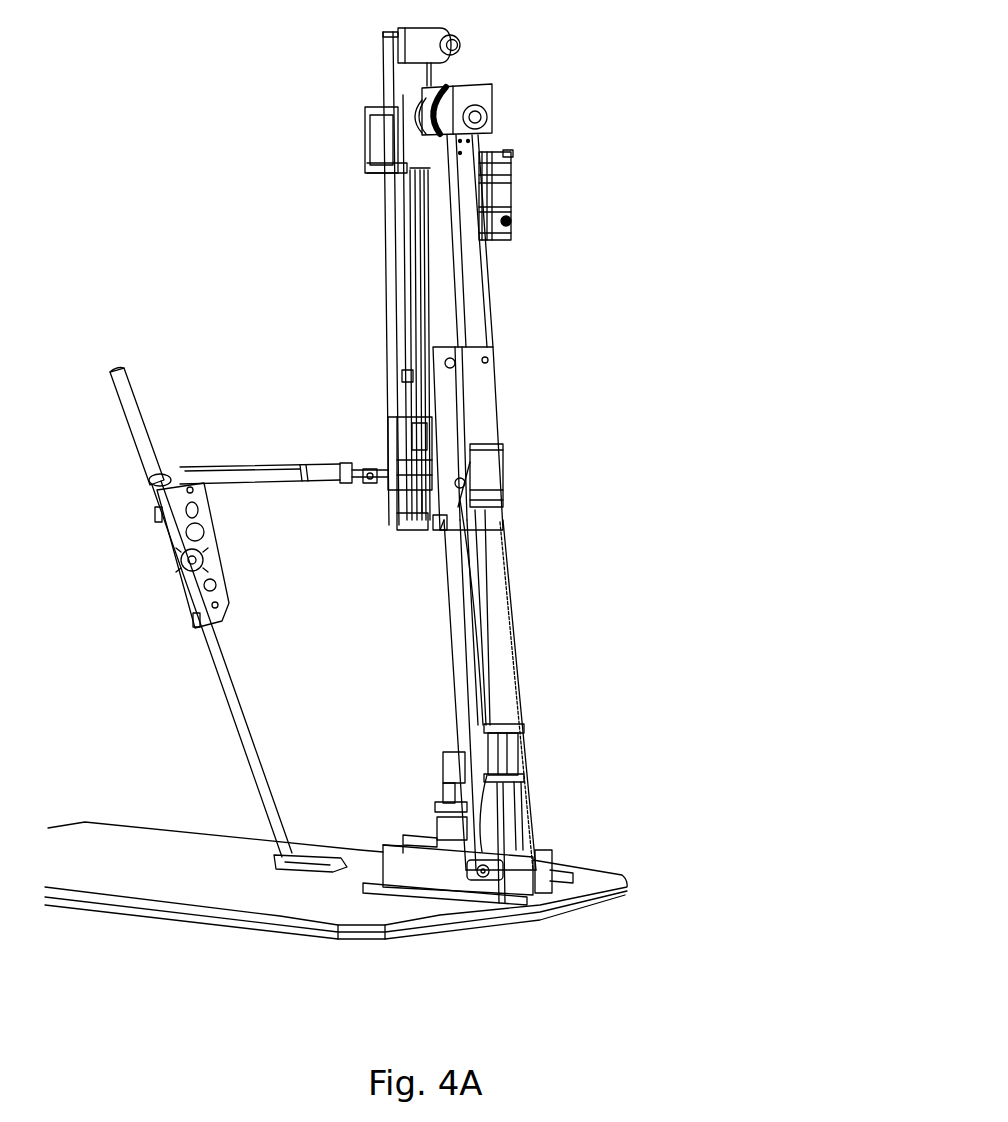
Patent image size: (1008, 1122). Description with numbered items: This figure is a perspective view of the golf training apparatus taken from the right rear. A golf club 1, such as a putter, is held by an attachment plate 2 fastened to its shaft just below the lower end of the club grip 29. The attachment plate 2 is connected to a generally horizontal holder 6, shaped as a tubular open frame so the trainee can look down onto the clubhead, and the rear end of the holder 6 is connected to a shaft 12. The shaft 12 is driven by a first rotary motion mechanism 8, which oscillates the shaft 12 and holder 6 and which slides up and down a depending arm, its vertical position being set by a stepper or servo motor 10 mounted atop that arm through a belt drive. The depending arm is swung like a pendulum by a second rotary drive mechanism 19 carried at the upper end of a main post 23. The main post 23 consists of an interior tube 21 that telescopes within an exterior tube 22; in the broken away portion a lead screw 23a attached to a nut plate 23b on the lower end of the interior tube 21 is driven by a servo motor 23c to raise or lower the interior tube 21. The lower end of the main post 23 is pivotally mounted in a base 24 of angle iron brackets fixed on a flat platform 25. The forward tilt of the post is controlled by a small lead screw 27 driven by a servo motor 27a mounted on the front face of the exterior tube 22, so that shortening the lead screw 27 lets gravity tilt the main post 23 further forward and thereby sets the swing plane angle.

The golf club 1 is at (224, 677).
The attachment plate 2 is at (203, 517).
The holder 6 is at (273, 480).
The first rotary motion mechanism 8 is at (384, 425).
The stepper or servo motor 10 is at (420, 45).
The shaft 12 is at (355, 481).
The second rotary drive mechanism 19 is at (506, 96).
The interior tube 21 is at (445, 282).
The exterior tube 22 is at (455, 395).
The main post 23 is at (520, 328).
The lead screw 23a is at (488, 598).
The nut plate 23b is at (497, 505).
The servo motor 23c is at (523, 738).
The base 24 is at (556, 873).
The flat platform 25 is at (160, 882).
The small lead screw 27 is at (458, 825).
The servo motor 27a is at (455, 765).
The club grip 29 is at (128, 393).